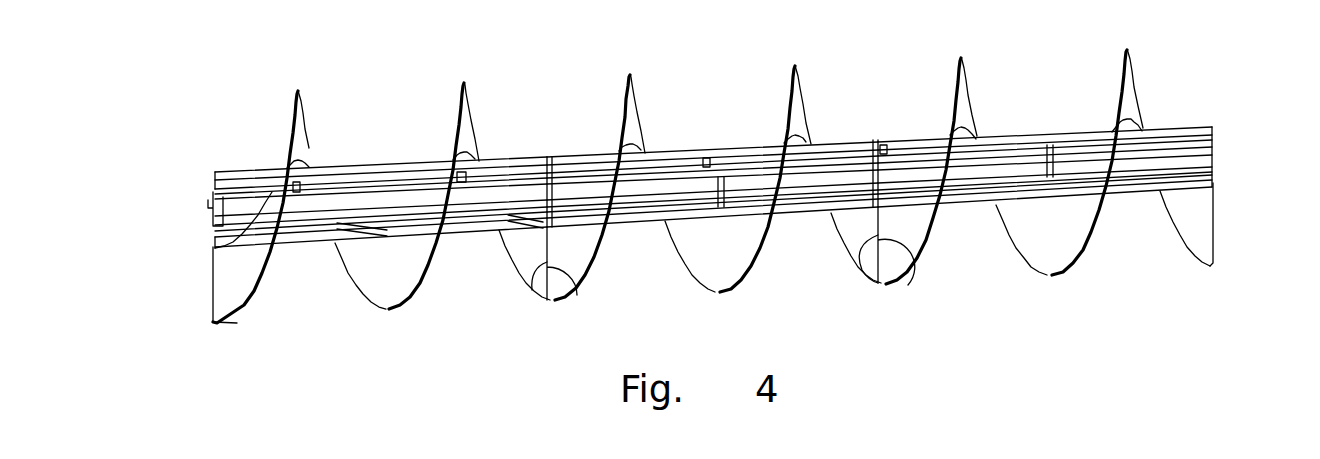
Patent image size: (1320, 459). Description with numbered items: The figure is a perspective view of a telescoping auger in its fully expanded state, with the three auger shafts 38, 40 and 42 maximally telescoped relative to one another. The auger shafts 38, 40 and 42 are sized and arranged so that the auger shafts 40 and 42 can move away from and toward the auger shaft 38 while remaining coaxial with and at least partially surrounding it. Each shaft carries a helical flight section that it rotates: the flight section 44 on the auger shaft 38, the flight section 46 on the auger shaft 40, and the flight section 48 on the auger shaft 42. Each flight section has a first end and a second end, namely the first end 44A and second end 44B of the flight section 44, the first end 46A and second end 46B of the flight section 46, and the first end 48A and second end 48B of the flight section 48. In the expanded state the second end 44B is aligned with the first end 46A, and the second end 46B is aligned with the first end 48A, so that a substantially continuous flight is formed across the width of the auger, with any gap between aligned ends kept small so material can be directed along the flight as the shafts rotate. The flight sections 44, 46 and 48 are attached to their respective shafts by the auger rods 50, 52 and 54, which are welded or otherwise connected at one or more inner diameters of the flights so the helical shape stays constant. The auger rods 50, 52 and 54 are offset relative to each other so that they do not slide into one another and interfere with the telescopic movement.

The auger shaft 38 is at (1007, 167).
The auger shaft 40 is at (733, 183).
The auger shaft 42 is at (502, 193).
The flight section 44 is at (1062, 257).
The first end 44A is at (1213, 240).
The second end 44B is at (913, 290).
The flight section 46 is at (725, 280).
The first end 46A is at (872, 257).
The second end 46B is at (575, 294).
The flight section 48 is at (395, 300).
The first end 48A is at (542, 278).
The second end 48B is at (212, 307).
The auger rod 50 is at (918, 145).
The auger rod 52 is at (702, 150).
The auger rod 54 is at (393, 168).